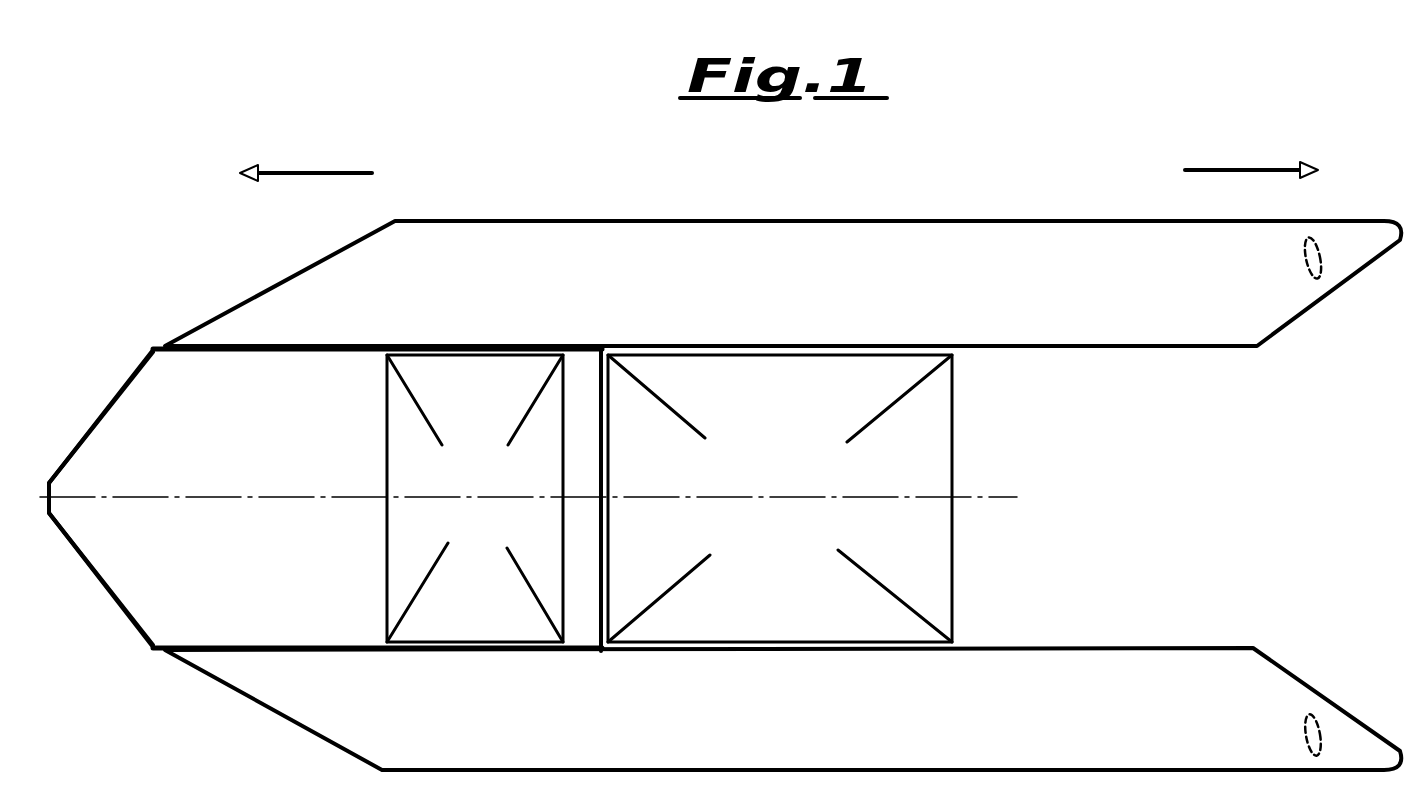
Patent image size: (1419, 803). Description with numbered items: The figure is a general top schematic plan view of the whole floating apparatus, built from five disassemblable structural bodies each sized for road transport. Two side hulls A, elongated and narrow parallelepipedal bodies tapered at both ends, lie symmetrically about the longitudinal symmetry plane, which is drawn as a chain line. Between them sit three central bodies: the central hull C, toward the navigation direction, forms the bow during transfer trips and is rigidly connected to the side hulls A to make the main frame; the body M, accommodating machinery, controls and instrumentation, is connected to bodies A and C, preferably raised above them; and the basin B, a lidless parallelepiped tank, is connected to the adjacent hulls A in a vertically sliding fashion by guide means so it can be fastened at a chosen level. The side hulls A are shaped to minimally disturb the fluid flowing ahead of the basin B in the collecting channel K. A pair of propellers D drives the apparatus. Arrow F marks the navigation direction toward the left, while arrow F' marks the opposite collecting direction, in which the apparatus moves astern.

The side hulls A is at (851, 289).
The basin B is at (790, 542).
The central hull C is at (276, 541).
The propellers D is at (1320, 272).
The collecting channel K is at (1090, 423).
The machinery body M is at (486, 544).
The navigation direction arrow F is at (306, 155).
The collecting direction arrow F' is at (1251, 153).